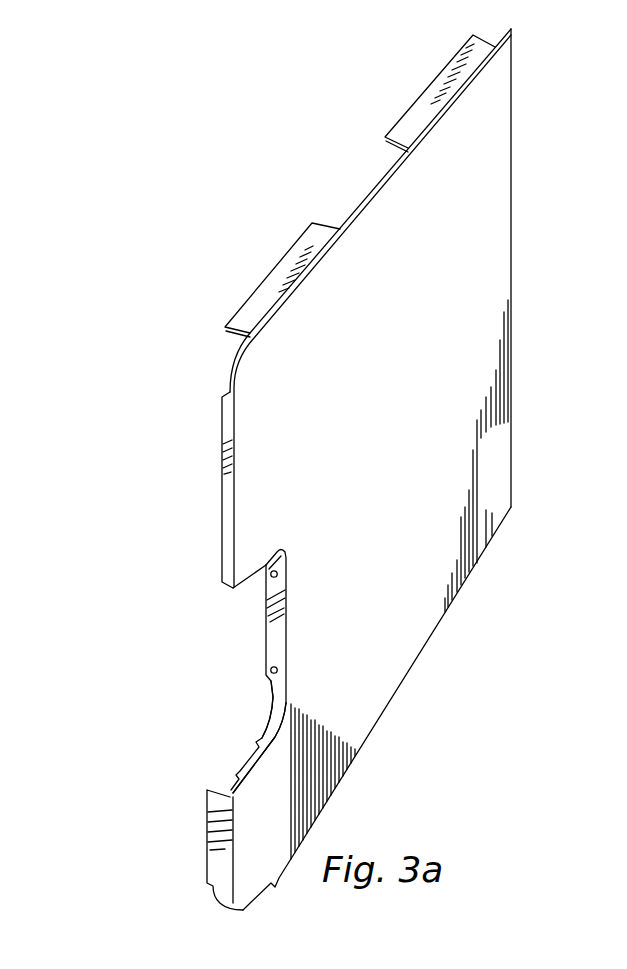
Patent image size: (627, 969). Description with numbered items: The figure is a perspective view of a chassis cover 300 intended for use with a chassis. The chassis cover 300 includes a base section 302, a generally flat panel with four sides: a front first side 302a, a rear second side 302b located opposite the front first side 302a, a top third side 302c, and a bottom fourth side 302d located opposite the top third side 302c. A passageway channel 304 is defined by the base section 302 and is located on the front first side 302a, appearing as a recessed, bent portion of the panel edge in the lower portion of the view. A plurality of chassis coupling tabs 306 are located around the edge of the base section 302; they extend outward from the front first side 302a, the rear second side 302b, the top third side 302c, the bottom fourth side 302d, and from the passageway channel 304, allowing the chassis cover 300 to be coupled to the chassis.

The chassis cover 300 is at (203, 190).
The base section 302 is at (397, 432).
The front first side 302a is at (225, 527).
The rear second side 302b is at (512, 88).
The top third side 302c is at (376, 185).
The bottom fourth side 302d is at (392, 697).
The passageway channel 304 is at (190, 681).
The chassis coupling tabs 306 is at (408, 125).